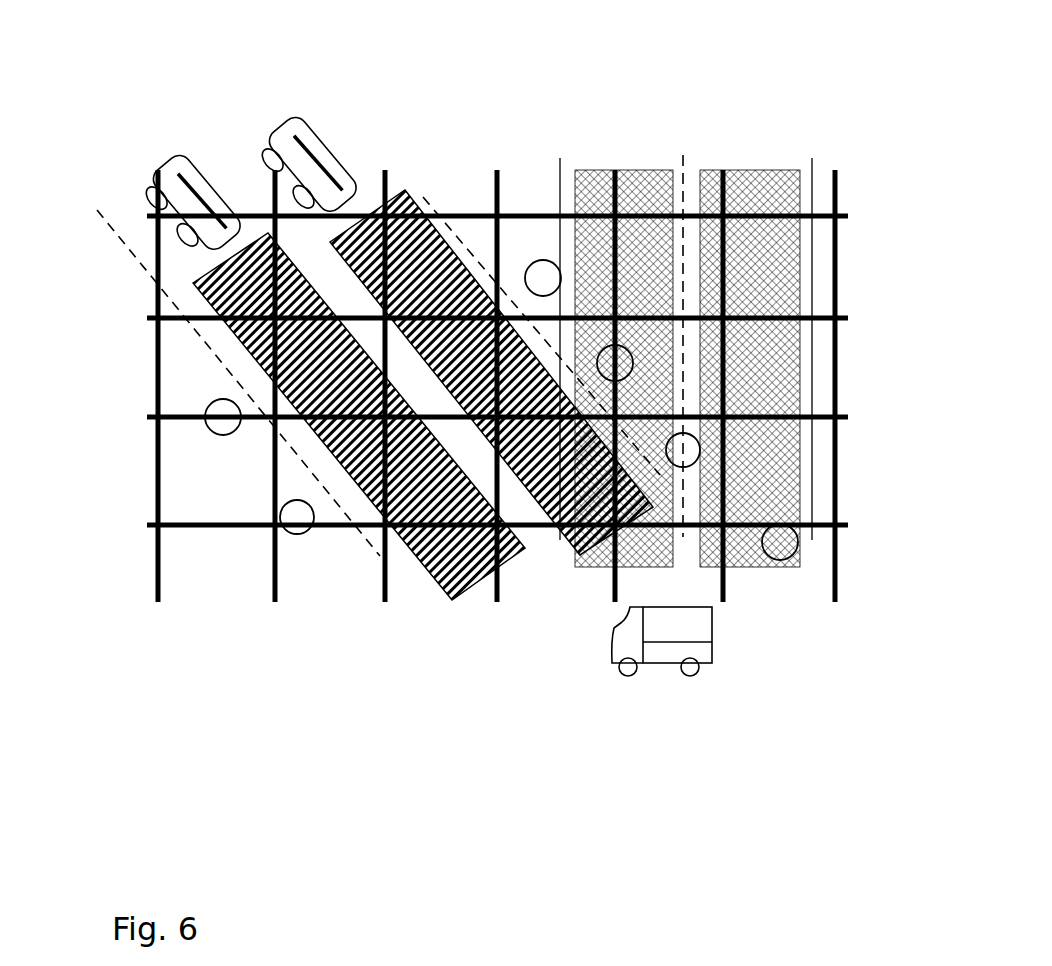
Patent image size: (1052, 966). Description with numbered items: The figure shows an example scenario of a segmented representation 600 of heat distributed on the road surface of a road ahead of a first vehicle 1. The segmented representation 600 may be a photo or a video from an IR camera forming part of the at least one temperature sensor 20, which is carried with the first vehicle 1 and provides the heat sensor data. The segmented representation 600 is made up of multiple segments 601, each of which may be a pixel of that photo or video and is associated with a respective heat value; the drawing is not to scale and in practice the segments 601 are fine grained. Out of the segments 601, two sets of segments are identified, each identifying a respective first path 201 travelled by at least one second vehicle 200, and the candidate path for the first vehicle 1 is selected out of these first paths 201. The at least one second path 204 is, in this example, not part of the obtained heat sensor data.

The first vehicle 1 is at (620, 664).
The temperature sensor 20 is at (662, 629).
The second vehicle 200 is at (258, 125).
The first path 201 is at (350, 233).
The second path 204 is at (630, 242).
The segmented representation 600 is at (135, 703).
The segment 601 is at (550, 563).